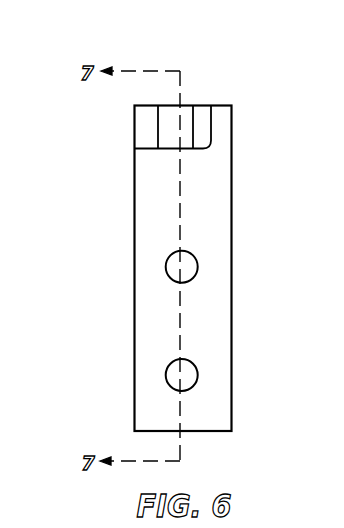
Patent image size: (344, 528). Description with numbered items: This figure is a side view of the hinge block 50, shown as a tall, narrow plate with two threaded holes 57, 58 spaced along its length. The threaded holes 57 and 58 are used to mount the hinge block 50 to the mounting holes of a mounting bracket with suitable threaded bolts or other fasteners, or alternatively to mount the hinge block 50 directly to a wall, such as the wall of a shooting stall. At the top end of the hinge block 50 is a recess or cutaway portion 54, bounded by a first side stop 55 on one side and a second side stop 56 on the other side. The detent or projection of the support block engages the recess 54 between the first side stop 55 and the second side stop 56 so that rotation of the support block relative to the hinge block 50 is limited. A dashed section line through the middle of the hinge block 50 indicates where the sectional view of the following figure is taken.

The hinge block 50 is at (134, 305).
The recess or cutaway portion 54 is at (188, 115).
The first side stop 55 is at (148, 117).
The second side stop 56 is at (202, 113).
The threaded hole 57 is at (183, 266).
The threaded hole 58 is at (183, 375).